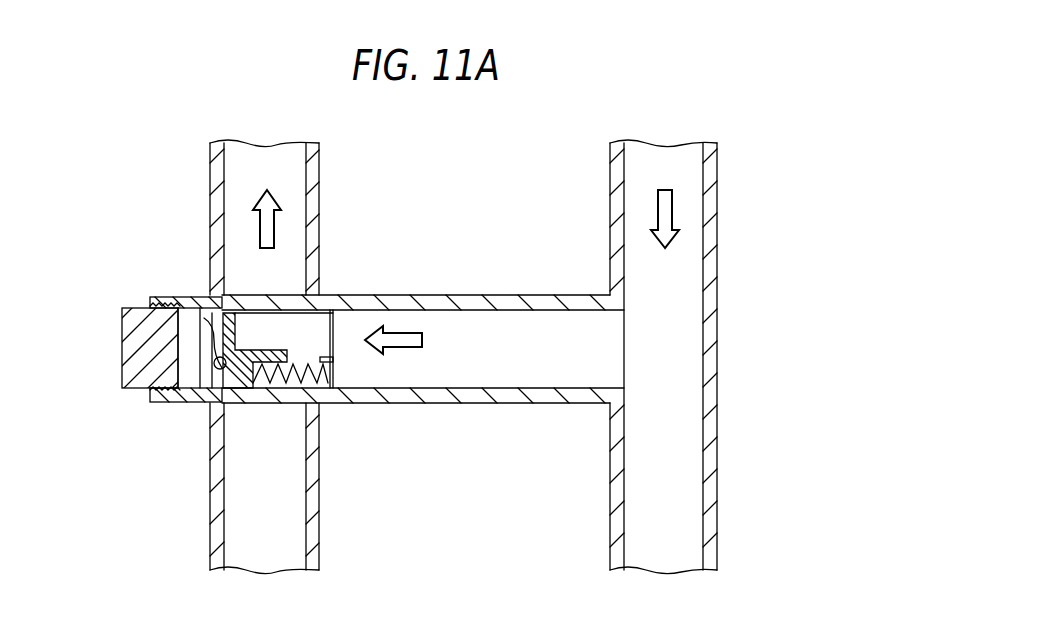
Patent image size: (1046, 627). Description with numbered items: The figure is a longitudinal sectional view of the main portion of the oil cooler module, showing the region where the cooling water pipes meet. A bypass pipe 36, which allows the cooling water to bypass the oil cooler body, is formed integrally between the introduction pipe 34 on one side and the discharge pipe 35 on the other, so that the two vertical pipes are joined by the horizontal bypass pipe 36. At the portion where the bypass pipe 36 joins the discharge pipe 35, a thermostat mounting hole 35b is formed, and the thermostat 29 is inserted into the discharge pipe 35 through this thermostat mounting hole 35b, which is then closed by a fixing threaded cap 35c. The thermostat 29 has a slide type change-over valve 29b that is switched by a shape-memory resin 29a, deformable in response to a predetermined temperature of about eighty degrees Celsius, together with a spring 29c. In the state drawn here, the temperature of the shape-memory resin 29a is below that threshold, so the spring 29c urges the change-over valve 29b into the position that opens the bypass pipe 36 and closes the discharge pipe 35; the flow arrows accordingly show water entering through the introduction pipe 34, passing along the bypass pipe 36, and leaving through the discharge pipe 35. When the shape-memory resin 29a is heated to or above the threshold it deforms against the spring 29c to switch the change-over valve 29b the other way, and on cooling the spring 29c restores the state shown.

The thermostat 29 is at (299, 304).
The shape-memory resin 29a is at (213, 331).
The slide type change-over valve 29b is at (233, 392).
The spring 29c is at (333, 393).
The introduction pipe 34 is at (718, 297).
The discharge pipe 35 is at (210, 528).
The thermostat mounting hole 35b is at (150, 382).
The fixing threaded cap 35c is at (135, 340).
The bypass pipe 36 is at (483, 296).